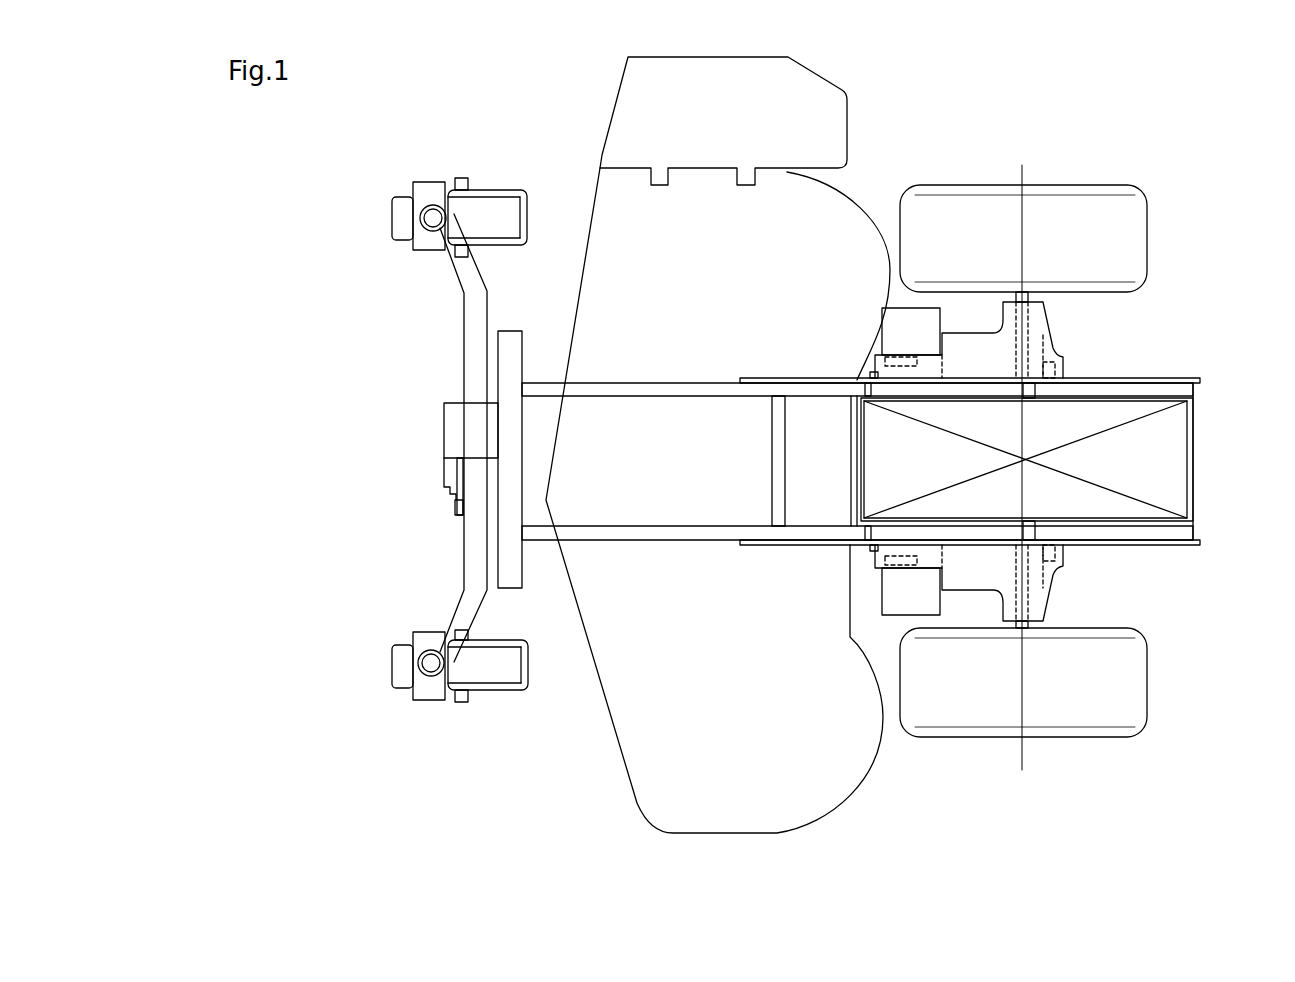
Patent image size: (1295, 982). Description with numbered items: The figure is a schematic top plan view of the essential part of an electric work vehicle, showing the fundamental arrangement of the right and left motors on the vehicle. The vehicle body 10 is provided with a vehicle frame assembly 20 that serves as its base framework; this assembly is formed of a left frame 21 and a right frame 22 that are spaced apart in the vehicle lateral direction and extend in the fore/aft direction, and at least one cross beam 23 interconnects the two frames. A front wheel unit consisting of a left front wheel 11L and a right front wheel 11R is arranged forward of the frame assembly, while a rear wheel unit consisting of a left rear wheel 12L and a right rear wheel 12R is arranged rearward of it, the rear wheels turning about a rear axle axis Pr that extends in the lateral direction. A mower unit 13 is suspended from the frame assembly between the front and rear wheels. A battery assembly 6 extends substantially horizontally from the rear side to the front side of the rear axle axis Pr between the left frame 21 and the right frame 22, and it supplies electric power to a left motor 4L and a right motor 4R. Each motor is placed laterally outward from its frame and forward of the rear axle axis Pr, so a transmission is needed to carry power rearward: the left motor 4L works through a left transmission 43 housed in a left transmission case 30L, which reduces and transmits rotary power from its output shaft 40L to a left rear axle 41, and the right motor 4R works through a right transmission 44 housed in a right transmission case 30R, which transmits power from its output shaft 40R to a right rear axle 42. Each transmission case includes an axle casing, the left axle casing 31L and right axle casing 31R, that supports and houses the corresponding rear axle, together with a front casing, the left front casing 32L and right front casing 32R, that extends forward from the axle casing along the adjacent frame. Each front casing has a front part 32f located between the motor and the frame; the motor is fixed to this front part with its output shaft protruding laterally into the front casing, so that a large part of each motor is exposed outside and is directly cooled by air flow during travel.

The vehicle body 10 is at (461, 360).
The right front wheel 11R is at (485, 195).
The left front wheel 11L is at (493, 691).
The right rear wheel 12R is at (1135, 237).
The left rear wheel 12L is at (1135, 680).
The mower unit 13 is at (850, 196).
The vehicle frame assembly 20 is at (849, 492).
The left frame 21 is at (692, 541).
The right frame 22 is at (615, 383).
The cross beam 23 is at (775, 422).
The right transmission case 30R is at (1042, 404).
The left transmission case 30L is at (1027, 612).
The right axle casing 31R is at (1045, 315).
The left axle casing 31L is at (1045, 607).
The right front casing 32R is at (972, 332).
The left front casing 32L is at (972, 591).
The front part 32f is at (870, 378).
The output shaft 40R is at (884, 360).
The output shaft 40L is at (884, 562).
The right motor 4R is at (897, 325).
The left motor 4L is at (897, 592).
The left rear axle 41 is at (1030, 617).
The right rear axle 42 is at (1030, 305).
The left transmission 43 is at (1065, 570).
The right transmission 44 is at (1067, 356).
The battery assembly 6 is at (1180, 458).
The rear axle axis Pr is at (1025, 451).